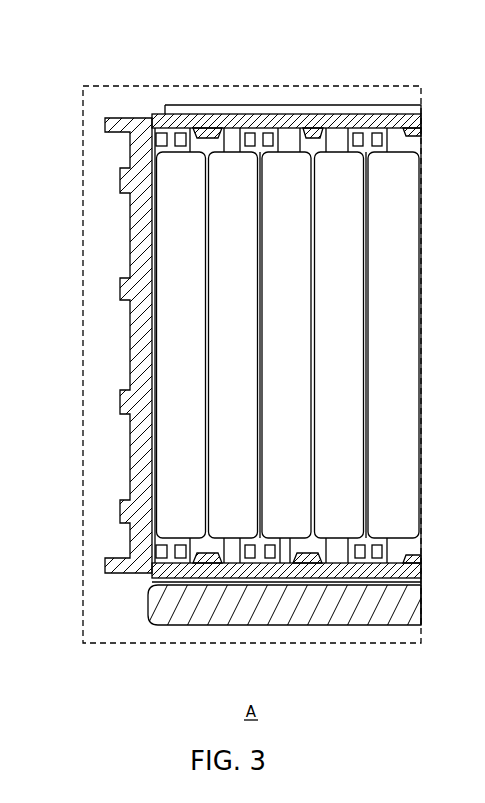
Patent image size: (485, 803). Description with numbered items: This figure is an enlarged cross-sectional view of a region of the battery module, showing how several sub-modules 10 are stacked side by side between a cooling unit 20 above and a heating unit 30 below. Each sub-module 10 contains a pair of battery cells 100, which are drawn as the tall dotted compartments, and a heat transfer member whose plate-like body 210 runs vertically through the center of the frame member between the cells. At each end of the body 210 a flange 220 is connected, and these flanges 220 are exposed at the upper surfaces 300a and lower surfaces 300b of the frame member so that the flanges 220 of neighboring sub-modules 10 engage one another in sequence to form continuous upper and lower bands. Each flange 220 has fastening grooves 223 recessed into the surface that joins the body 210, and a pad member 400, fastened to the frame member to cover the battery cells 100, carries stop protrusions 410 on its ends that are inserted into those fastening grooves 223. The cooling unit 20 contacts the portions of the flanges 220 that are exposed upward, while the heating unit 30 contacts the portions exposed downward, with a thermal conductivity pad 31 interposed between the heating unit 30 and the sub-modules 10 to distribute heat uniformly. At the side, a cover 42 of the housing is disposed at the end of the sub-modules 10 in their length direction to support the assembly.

The sub-module 10 is at (223, 104).
The cooling unit 20 is at (395, 103).
The heating unit 30 is at (373, 631).
The thermal conductivity pad 31 is at (421, 580).
The cover 42 is at (128, 165).
The battery cell 100 is at (222, 437).
The body 210 is at (207, 331).
The flange 220 is at (260, 113).
The fastening groove 223 is at (160, 113).
The upper surface of frame member 300a is at (213, 135).
The lower surface of frame member 300b is at (213, 585).
The pad member 400 is at (152, 152).
The stop protrusion 410 is at (156, 138).